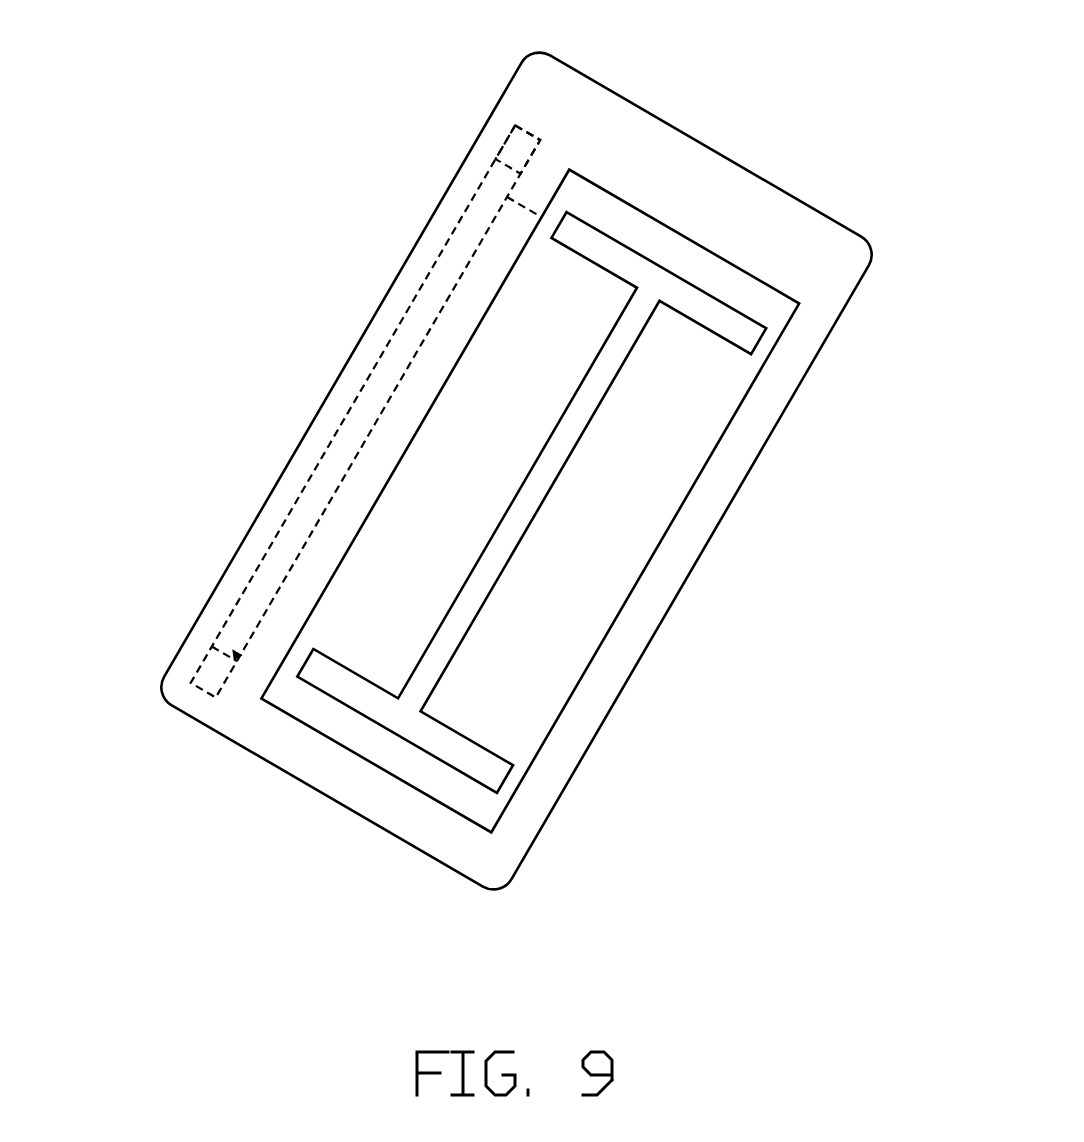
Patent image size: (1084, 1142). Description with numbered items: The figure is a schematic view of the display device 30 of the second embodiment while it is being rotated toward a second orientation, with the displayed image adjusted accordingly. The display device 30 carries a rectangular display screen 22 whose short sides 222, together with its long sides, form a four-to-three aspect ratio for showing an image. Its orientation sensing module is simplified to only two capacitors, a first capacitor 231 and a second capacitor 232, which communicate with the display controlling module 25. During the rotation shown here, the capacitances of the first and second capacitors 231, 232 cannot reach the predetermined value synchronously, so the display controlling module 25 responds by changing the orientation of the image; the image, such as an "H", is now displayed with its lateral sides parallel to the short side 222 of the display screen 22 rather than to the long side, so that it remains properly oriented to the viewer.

The display device 30 is at (148, 686).
The display screen 22 is at (575, 635).
The short side 222 is at (750, 272).
The display controlling module 25 is at (543, 183).
The first capacitor 231 is at (515, 157).
The second capacitor 232 is at (212, 672).